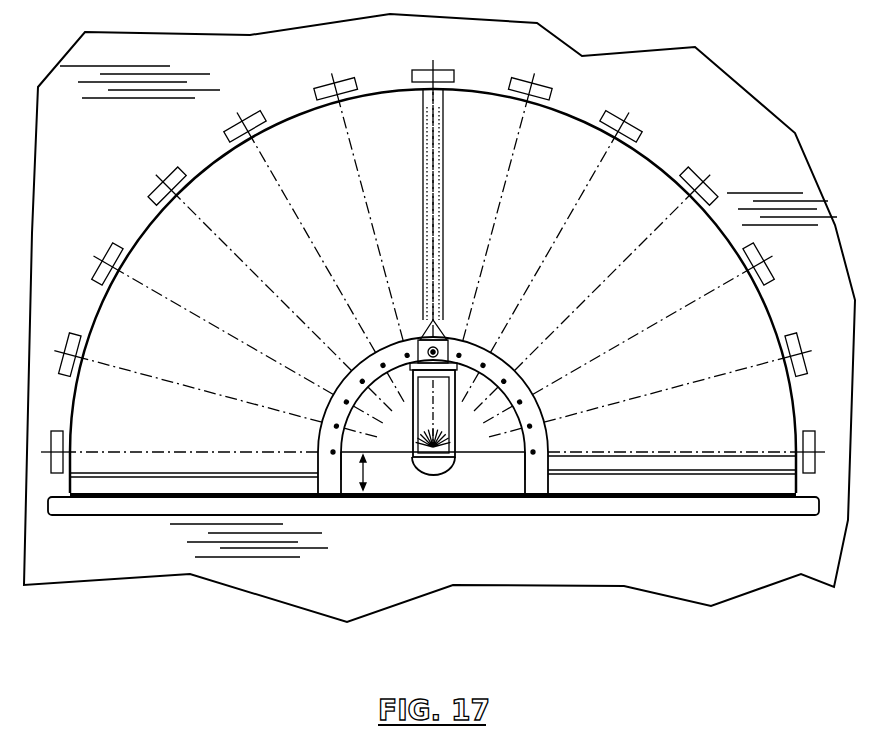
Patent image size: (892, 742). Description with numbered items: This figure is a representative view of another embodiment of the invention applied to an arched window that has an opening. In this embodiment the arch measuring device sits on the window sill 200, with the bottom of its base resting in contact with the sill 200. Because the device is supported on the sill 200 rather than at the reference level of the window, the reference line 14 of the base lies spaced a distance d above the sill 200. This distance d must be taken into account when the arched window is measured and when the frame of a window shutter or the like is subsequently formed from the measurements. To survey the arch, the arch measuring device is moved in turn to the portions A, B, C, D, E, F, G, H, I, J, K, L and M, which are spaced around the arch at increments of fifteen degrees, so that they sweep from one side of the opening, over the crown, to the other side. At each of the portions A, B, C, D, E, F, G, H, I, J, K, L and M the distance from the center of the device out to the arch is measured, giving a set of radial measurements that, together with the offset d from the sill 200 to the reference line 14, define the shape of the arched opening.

The portion A is at (333, 452).
The portion B is at (336, 426).
The portion C is at (346, 402).
The portion D is at (362, 381).
The portion E is at (383, 365).
The portion F is at (407, 355).
The portion G is at (433, 352).
The portion H is at (459, 355).
The portion I is at (483, 365).
The portion J is at (504, 381).
The portion K is at (520, 402).
The portion L is at (530, 426).
The portion M is at (535, 452).
The reference line 14 is at (478, 454).
The window sill 200 is at (644, 507).
The distance d is at (373, 472).